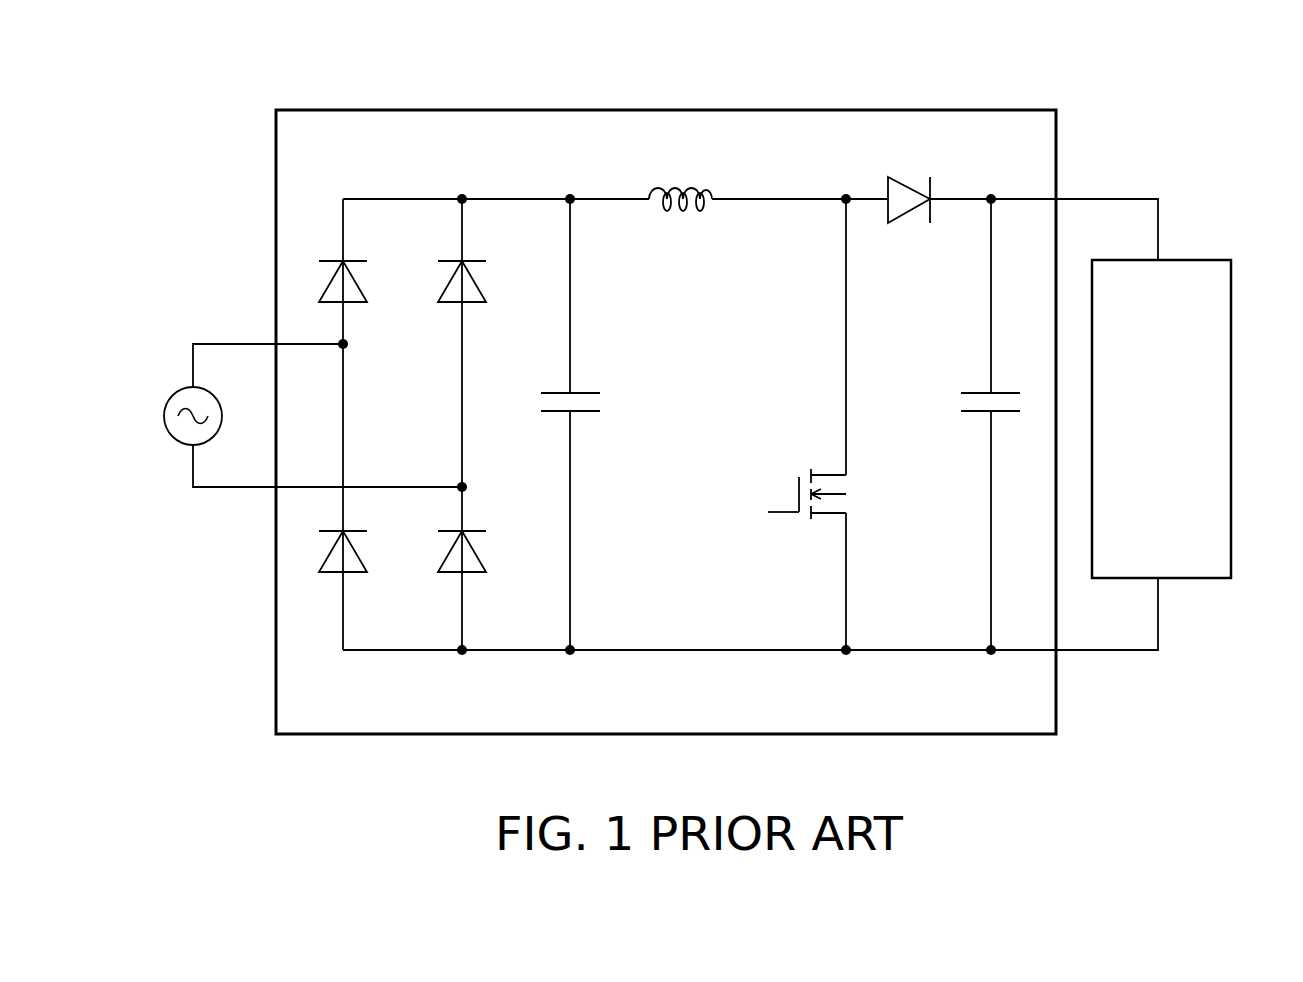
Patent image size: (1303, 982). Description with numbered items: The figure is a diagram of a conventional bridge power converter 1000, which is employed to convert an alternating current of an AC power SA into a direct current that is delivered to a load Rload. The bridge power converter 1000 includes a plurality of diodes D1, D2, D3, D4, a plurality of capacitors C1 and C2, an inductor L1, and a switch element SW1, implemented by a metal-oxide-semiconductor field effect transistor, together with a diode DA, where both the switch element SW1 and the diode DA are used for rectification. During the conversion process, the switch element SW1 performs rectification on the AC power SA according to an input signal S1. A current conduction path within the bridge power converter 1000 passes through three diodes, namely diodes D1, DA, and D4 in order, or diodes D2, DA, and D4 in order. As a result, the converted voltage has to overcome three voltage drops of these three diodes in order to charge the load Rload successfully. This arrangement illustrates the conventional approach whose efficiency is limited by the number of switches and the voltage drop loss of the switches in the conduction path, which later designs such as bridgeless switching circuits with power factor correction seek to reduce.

The bridge power converter 1000 is at (988, 110).
The AC power SA is at (166, 396).
The diode D1 is at (356, 281).
The diode D2 is at (476, 281).
The diode D3 is at (356, 550).
The diode D4 is at (476, 550).
The inductor L1 is at (716, 195).
The capacitor C1 is at (599, 396).
The capacitor C2 is at (960, 394).
The switch element SW1 is at (855, 494).
The input signal S1 is at (766, 514).
The diode DA is at (906, 186).
The load Rload is at (1161, 419).